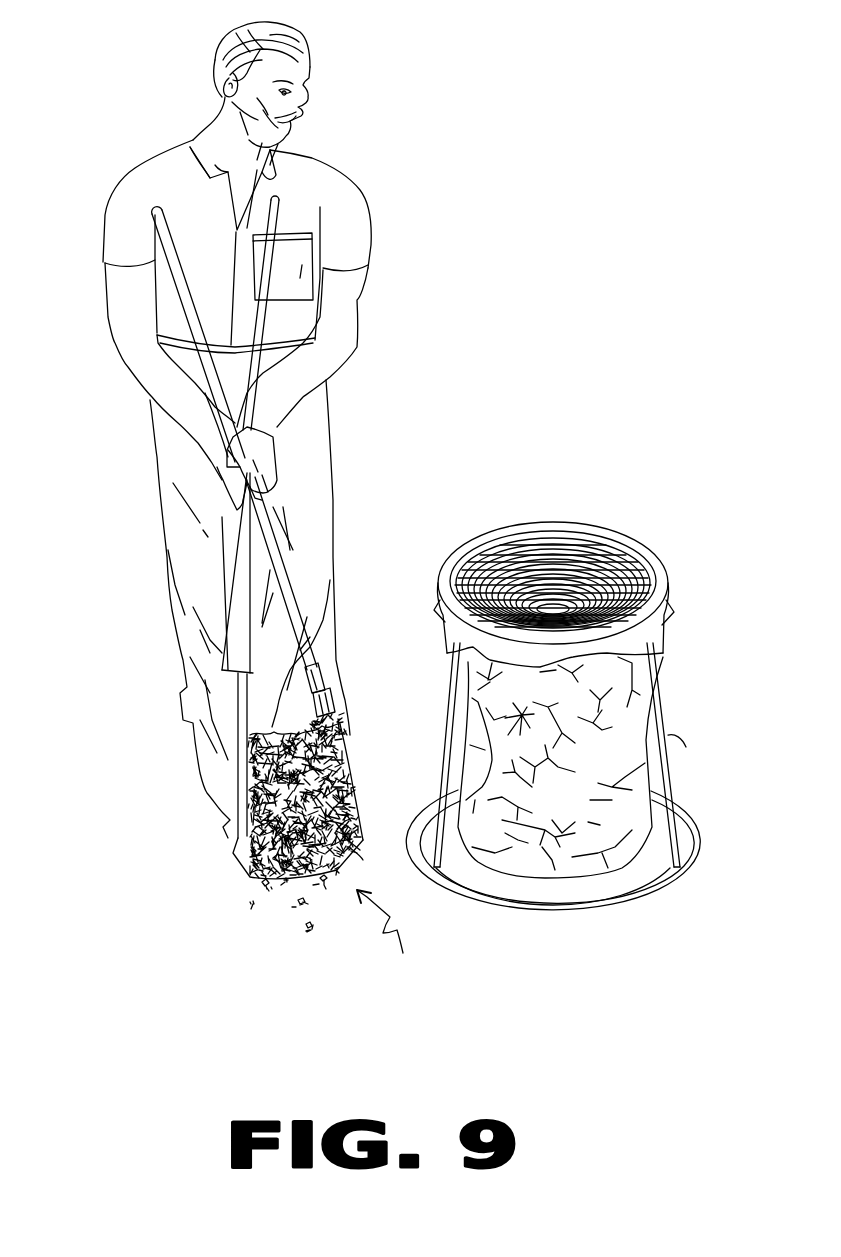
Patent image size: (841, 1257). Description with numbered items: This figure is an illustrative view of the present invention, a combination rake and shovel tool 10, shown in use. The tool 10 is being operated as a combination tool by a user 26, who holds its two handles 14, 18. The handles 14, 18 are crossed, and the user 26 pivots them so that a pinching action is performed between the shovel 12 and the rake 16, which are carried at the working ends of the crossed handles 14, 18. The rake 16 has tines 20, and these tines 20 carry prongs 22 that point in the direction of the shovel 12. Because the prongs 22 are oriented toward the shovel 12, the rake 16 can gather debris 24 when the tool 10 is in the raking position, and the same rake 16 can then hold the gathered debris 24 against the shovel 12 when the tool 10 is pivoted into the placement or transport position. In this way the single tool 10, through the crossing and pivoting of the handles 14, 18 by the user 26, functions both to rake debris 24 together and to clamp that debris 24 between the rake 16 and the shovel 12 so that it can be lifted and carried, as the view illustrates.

The combination rake and shovel tool 10 is at (655, 155).
The shovel 12 is at (237, 762).
The handle 14 is at (298, 195).
The rake 16 is at (333, 707).
The handle 18 is at (185, 298).
The tines 20 is at (363, 720).
The prongs 22 is at (353, 863).
The debris 24 is at (283, 875).
The user 26 is at (353, 303).